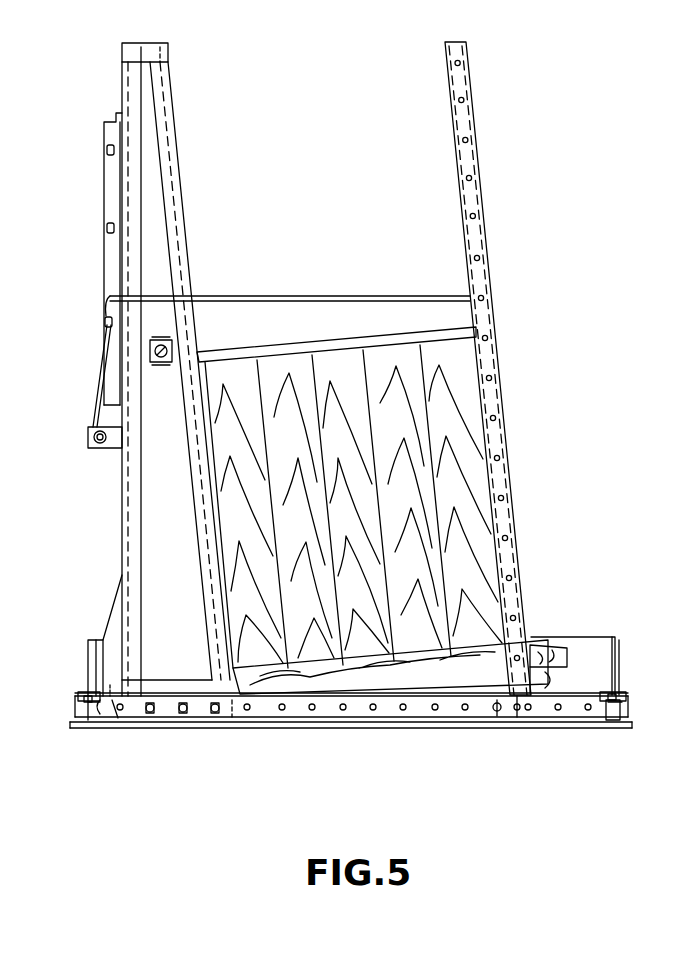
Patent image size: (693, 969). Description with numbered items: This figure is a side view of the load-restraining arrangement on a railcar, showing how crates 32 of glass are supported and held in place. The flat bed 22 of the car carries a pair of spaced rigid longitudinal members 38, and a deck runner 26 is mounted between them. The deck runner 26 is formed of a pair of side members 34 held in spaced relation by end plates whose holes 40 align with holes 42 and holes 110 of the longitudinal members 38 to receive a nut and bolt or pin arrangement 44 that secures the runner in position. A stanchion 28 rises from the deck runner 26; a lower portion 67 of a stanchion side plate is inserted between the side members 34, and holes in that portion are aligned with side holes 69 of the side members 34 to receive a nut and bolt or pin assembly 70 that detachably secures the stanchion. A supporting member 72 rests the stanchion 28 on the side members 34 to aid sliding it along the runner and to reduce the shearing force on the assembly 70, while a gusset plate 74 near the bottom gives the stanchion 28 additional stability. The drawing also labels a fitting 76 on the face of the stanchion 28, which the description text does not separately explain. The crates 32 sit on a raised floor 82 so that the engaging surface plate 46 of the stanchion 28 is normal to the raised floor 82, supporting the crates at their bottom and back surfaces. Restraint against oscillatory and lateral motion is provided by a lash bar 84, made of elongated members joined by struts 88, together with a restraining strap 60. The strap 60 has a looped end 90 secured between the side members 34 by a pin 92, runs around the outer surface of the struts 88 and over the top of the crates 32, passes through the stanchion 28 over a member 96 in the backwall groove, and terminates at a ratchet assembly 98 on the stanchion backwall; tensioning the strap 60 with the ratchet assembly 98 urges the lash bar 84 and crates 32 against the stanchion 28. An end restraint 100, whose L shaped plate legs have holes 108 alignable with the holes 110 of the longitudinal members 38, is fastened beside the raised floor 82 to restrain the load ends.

The flat bed 22 is at (92, 745).
The deck runner 26 is at (455, 692).
The stanchion 28 is at (190, 96).
The crates 32 is at (318, 346).
The side members 34 is at (312, 712).
The rigid longitudinal members 38 is at (628, 722).
The holes 40 is at (116, 718).
The holes 42 is at (351, 670).
The nut and bolt or pin arrangement 44 is at (80, 712).
The engaging surface plate 46 is at (192, 220).
The restraining strap 60 is at (340, 298).
The portion of side plate 67 is at (232, 728).
The side holes 69 is at (343, 712).
The nut and bolt or pin assembly 70 is at (183, 716).
The supporting member 72 is at (178, 692).
The gusset plate 74 is at (118, 620).
The pivot fixture 76 is at (163, 368).
The raised floor 82 is at (582, 652).
The lash bar 84 is at (488, 90).
The struts 88 is at (481, 262).
The looped end 90 is at (517, 712).
The pin 92 is at (495, 712).
The member 96 is at (106, 150).
The ratchet assembly 98 is at (100, 452).
The end restraint 100 is at (586, 622).
The holes 108 is at (84, 696).
The holes 110 is at (80, 701).